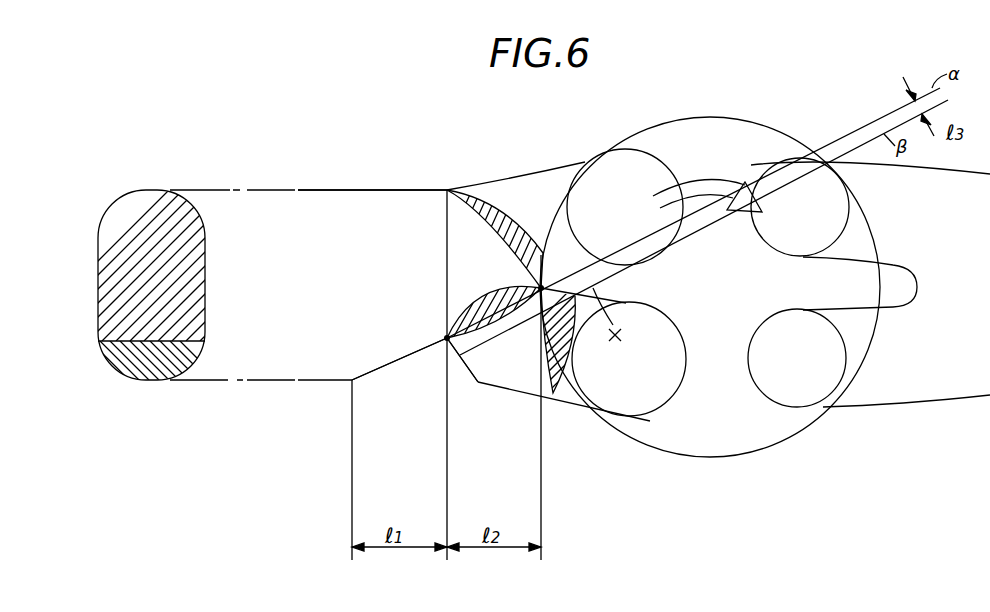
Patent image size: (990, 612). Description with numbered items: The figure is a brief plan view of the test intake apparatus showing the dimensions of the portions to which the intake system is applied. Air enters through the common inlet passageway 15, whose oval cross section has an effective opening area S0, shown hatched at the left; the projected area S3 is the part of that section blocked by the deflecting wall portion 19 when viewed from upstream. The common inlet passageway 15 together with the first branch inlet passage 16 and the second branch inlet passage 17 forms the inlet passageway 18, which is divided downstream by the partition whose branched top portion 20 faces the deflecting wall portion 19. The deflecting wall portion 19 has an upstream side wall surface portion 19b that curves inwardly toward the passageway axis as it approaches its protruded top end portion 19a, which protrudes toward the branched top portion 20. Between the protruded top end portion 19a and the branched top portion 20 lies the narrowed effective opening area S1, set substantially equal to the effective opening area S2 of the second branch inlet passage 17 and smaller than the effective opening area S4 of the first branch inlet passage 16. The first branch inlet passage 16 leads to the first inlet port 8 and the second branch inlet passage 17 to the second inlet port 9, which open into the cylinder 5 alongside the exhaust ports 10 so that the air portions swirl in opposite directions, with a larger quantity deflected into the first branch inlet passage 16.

The cylinder 5 is at (731, 444).
The first inlet port 8 is at (600, 183).
The second inlet port 9 is at (620, 405).
The exhaust ports 10 is at (777, 243).
The common inlet passageway 15 is at (302, 292).
The first branch inlet passage 16 is at (518, 195).
The second branch inlet passage 17 is at (520, 378).
The inlet passageway 18 is at (372, 187).
The deflecting wall portion 19 is at (420, 357).
The protruded top end portion 19a is at (443, 333).
The upstream side wall surface portion 19b is at (395, 363).
The branched top portion 20 is at (487, 197).
The effective opening area of the common inlet passageway S0 is at (117, 288).
The effective opening area between protruded top end and branch tip S1 is at (479, 334).
The effective opening area of the second branch inlet passage S2 is at (558, 392).
The projected area of the deflecting wall S3 is at (153, 373).
The effective opening area of the first branch inlet passage S4 is at (465, 230).